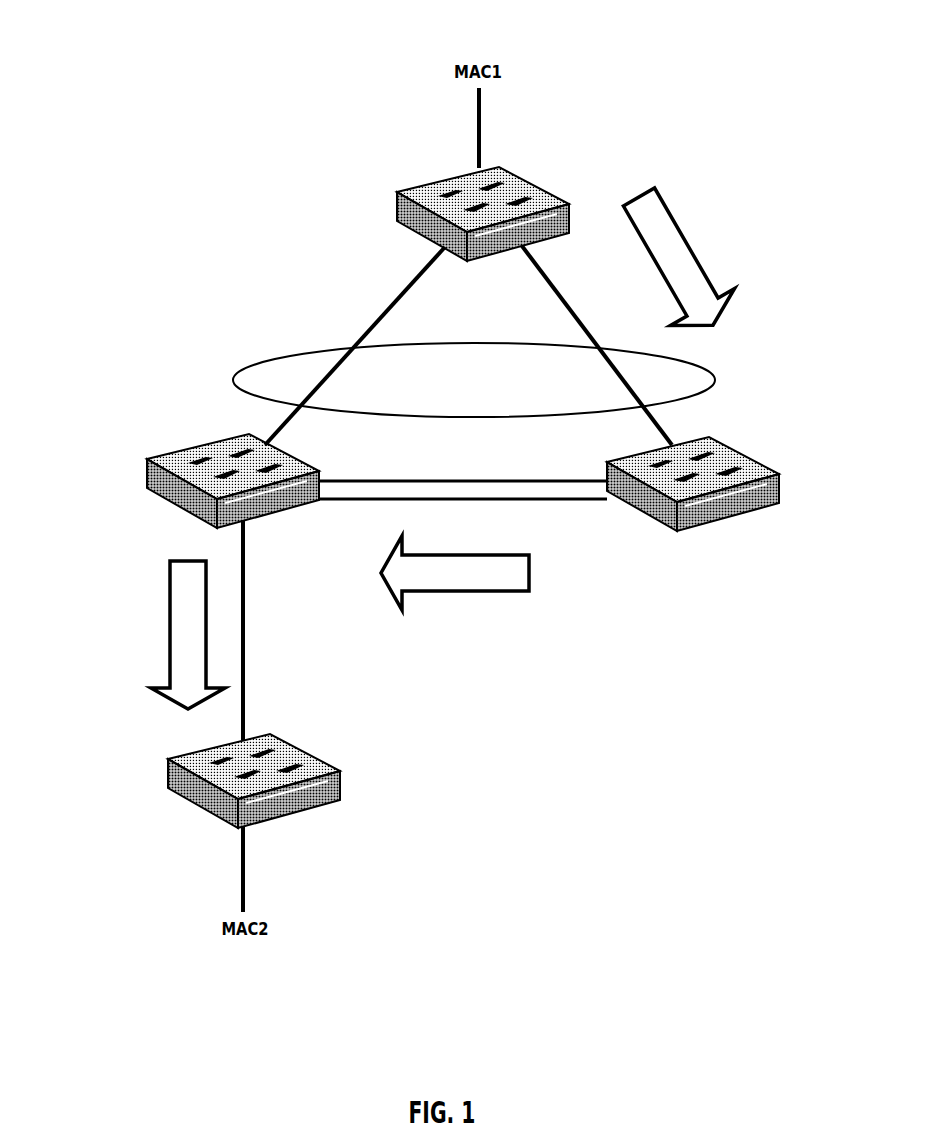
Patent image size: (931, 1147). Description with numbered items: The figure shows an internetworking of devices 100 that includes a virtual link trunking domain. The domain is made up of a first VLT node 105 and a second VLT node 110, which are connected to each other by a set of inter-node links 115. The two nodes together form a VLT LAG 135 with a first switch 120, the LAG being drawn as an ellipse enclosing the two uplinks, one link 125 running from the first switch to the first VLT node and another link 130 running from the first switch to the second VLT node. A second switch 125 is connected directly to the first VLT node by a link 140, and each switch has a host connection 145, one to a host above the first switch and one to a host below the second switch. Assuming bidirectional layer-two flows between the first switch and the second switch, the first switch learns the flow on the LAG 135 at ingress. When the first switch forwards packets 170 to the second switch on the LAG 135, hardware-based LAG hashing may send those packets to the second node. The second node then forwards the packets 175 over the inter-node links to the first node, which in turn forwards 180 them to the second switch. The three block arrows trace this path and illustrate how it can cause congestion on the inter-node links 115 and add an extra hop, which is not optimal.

The internetworking of devices 100 is at (457, 32).
The VLT Node 1 105 is at (183, 481).
The VLT Node 2 110 is at (743, 484).
The inter-node links 115 is at (452, 497).
The Switch 1 120 is at (441, 214).
The Switch 2 125 is at (351, 343).
The link between switch 1 and VLT node 2 130 is at (597, 339).
The VLT LAG 135 is at (714, 373).
The link between VLT node 1 and switch 2 140 is at (250, 654).
The link to MAC address host 145 is at (485, 126).
The packets 170 is at (676, 261).
The packets 175 is at (455, 573).
The forwarding 180 is at (188, 635).